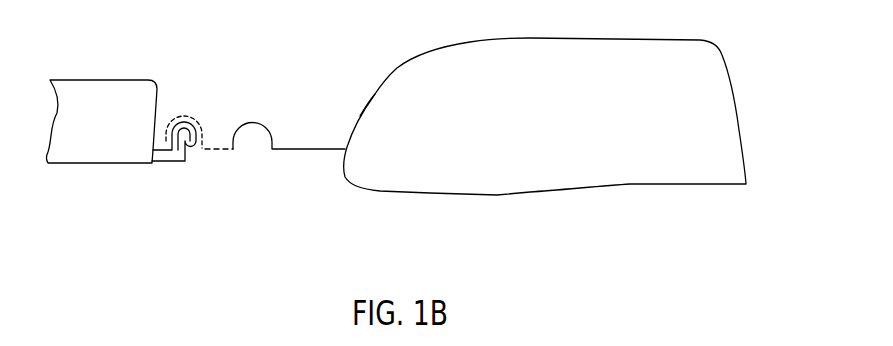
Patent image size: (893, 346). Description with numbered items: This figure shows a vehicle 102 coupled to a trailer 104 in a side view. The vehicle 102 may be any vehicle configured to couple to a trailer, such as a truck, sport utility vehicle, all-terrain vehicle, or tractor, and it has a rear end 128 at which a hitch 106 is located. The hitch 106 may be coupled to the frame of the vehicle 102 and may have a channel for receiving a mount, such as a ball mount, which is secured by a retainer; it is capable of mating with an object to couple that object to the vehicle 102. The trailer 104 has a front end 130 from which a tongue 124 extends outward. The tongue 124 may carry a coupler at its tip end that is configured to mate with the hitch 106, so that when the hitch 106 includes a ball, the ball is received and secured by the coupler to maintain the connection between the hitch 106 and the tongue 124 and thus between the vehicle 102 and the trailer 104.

The vehicle 102 is at (80, 78).
The trailer 104 is at (582, 57).
The hitch 106 is at (176, 172).
The tongue 124 is at (262, 160).
The rear end 128 is at (158, 92).
The front end 130 is at (373, 98).